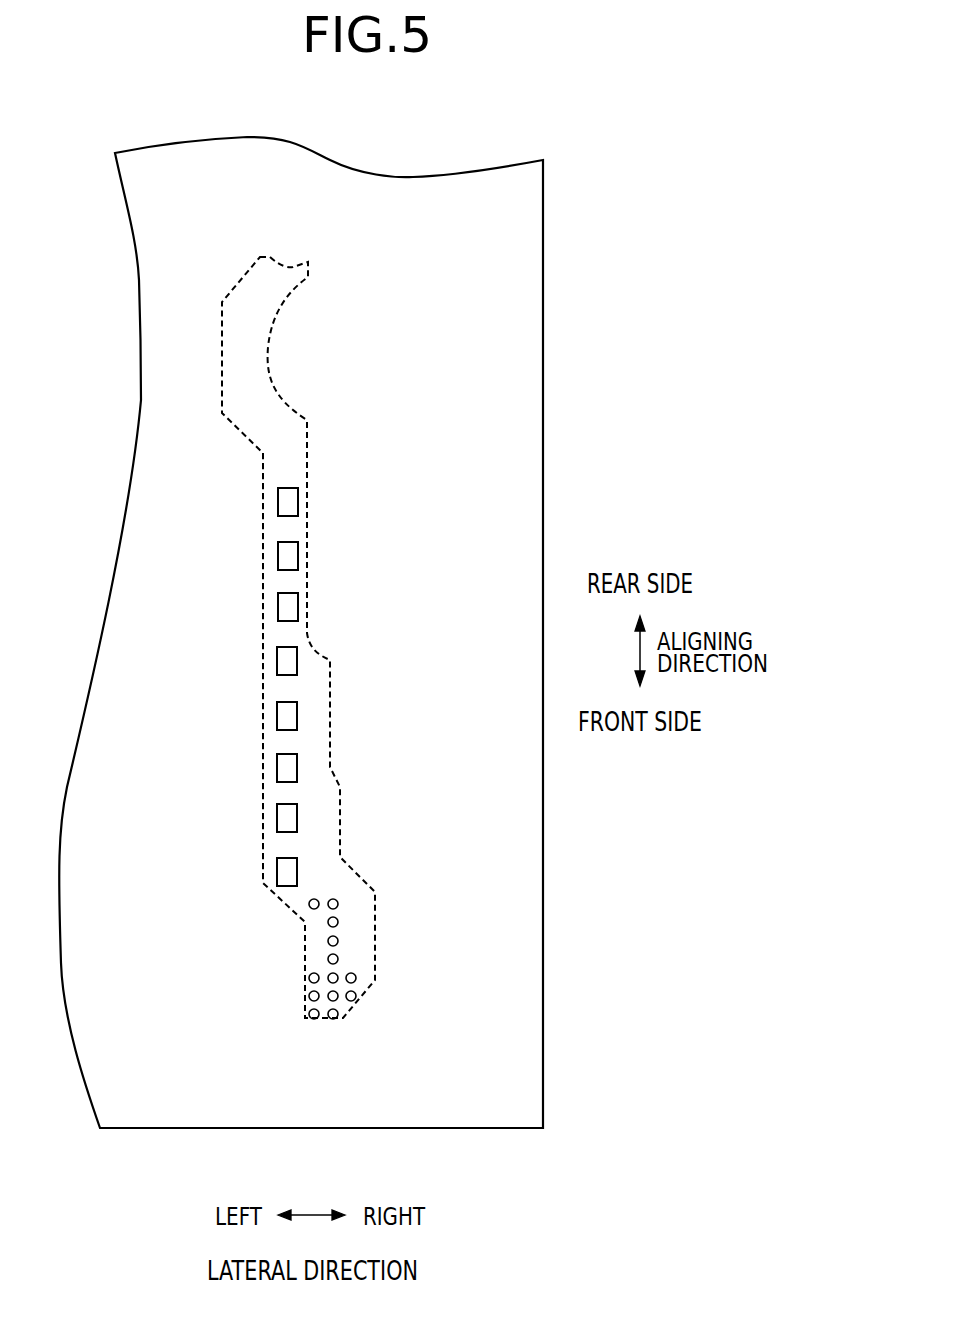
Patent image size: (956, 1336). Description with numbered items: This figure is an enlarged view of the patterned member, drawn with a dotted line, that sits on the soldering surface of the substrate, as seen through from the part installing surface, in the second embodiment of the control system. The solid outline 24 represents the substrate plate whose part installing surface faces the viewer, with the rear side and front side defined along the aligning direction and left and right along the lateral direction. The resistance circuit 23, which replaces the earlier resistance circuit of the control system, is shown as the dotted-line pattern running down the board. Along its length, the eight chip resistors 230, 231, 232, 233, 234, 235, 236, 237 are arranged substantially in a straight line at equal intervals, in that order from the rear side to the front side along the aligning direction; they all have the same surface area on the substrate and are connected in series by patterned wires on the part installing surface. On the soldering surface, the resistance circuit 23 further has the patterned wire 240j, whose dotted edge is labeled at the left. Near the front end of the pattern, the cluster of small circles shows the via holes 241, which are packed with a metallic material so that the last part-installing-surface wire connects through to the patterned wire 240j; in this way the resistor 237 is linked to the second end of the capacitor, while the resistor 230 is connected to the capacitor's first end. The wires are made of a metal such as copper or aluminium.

The circuit board 24 is at (515, 217).
The resistance circuit 23 is at (333, 432).
The patterned wire 240j is at (262, 652).
The resistor 230 is at (292, 502).
The resistor 231 is at (292, 557).
The resistor 232 is at (292, 608).
The resistor 233 is at (292, 662).
The resistor 234 is at (292, 715).
The resistor 235 is at (292, 767).
The resistor 236 is at (292, 818).
The resistor 237 is at (292, 873).
The via holes 241 is at (317, 1015).